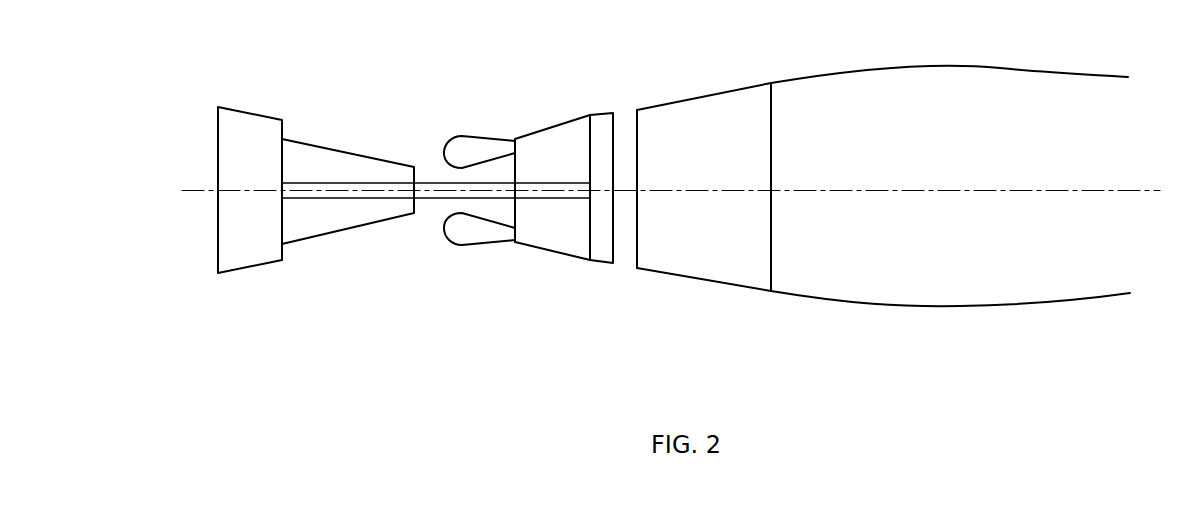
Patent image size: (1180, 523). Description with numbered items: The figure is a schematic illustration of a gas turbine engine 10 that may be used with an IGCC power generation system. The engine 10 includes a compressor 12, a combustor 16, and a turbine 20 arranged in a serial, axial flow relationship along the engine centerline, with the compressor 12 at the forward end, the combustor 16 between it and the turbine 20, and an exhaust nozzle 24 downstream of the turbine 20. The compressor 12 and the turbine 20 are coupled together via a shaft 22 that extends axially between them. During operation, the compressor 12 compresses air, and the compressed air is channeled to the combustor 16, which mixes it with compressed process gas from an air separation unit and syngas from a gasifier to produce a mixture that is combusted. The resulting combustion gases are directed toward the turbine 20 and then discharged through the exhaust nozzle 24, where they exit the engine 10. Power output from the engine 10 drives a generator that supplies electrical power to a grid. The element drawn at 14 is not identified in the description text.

The engine 10 is at (302, 71).
The compressor 12 is at (270, 262).
The compressor 14 is at (384, 223).
The combustor 16 is at (463, 246).
The turbine 20 is at (599, 264).
The shaft 22 is at (431, 183).
The exhaust nozzle 24 is at (887, 304).